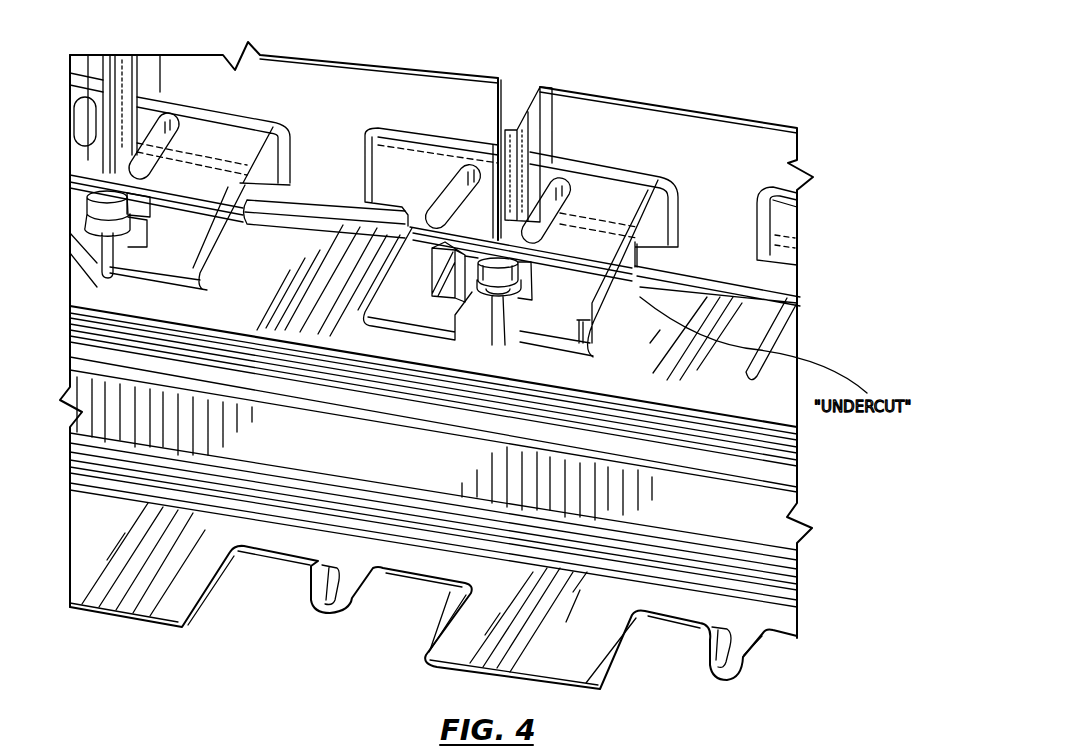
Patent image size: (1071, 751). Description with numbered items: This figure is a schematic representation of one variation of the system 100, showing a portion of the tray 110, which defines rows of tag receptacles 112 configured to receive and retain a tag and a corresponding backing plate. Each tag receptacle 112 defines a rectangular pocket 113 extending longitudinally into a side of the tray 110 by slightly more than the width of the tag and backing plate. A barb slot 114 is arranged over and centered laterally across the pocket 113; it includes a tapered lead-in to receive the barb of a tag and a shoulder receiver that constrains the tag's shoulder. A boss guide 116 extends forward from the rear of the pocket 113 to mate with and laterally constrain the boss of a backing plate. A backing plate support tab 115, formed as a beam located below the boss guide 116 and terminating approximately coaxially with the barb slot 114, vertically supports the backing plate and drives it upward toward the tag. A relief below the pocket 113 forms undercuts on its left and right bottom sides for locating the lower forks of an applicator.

The system 100 is at (818, 110).
The tray 110 is at (610, 117).
The tag receptacle 112 is at (497, 70).
The pocket 113 is at (575, 277).
The barb slot 114 is at (515, 102).
The backing plate support tab 115 is at (492, 345).
The boss guide 116 is at (465, 245).